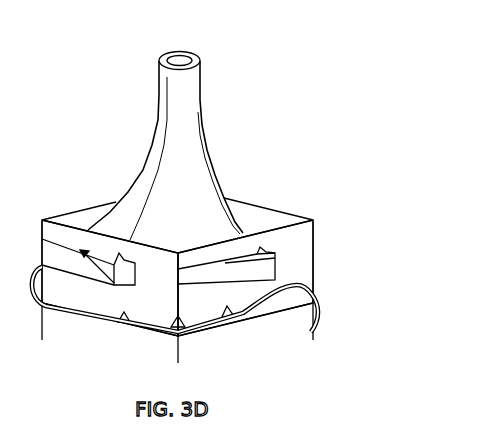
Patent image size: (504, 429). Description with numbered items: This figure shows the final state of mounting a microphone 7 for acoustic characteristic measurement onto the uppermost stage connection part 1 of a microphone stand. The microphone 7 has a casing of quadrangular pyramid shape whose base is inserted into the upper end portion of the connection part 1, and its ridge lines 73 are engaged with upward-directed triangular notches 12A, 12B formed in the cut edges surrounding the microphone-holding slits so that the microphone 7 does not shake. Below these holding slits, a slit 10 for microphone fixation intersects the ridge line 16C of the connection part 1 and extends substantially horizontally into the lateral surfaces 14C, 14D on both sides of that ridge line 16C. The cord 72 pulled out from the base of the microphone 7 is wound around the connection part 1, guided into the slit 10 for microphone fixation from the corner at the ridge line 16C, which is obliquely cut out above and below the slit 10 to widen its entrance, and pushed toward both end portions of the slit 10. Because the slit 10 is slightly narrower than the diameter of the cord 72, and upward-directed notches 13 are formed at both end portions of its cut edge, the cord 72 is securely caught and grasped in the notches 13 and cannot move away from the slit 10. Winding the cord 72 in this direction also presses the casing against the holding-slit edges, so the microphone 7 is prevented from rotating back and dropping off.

The uppermost stage connection part 1 is at (314, 220).
The microphone for acoustic characteristic measurement 7 is at (200, 82).
The slit for microphone fixation 10 is at (170, 337).
The notch 12A is at (262, 237).
The notch 12B is at (112, 245).
The notches 13 is at (127, 312).
The lateral surface 14C is at (308, 255).
The lateral surface 14D is at (41, 327).
The ridge line 16C is at (181, 353).
The cord 72 is at (320, 303).
The ridge lines 73 is at (157, 170).